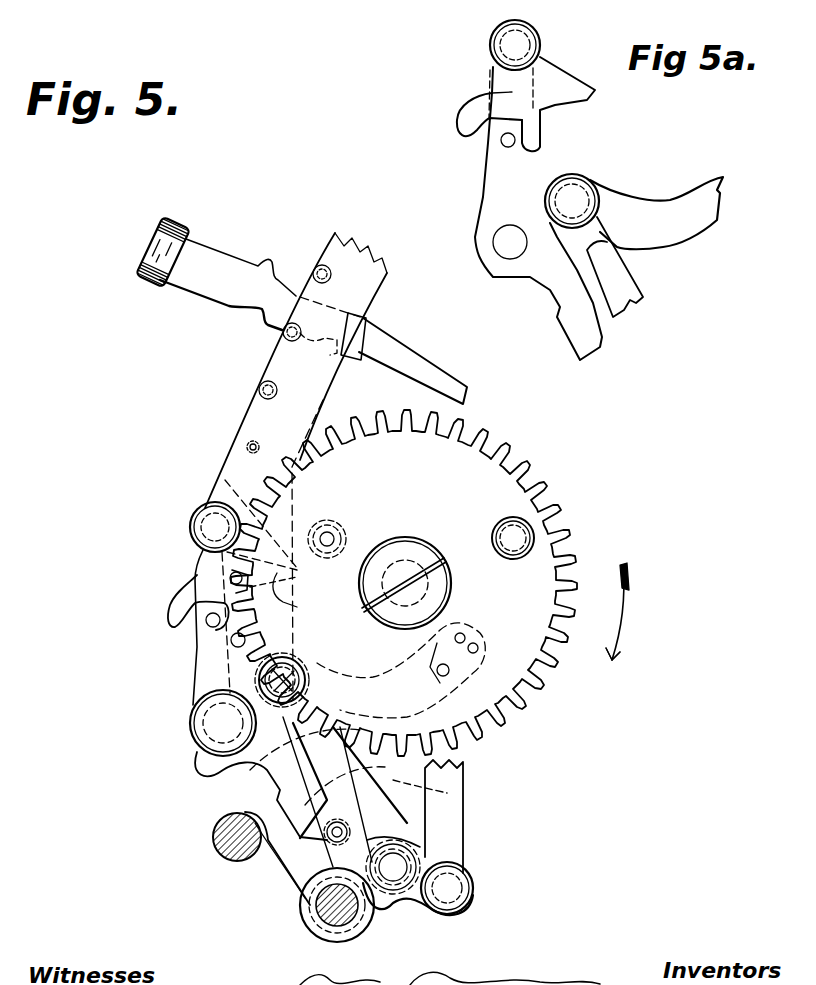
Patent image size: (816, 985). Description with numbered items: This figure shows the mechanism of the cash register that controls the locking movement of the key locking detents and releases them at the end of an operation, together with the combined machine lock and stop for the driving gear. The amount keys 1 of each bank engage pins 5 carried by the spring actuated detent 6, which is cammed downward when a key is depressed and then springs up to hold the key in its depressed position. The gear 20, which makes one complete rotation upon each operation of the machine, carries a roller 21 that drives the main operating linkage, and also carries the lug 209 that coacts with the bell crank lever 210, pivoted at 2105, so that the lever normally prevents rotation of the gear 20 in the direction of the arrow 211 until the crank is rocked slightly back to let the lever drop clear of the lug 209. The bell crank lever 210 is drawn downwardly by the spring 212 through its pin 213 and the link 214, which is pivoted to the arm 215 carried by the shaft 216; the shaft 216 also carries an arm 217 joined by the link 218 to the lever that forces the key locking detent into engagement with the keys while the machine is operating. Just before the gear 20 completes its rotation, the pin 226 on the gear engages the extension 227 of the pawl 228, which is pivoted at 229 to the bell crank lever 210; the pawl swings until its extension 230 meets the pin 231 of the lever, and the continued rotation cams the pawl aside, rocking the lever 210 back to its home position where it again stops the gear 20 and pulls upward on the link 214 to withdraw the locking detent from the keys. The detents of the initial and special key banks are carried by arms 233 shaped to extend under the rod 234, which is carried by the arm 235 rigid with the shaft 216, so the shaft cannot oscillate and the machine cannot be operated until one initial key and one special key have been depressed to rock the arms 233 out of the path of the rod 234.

In FIG. 5, the amount keys 1 is at (148, 245).
In FIG. 5, the pins 5 is at (262, 390).
In FIG. 5, the detent 6 is at (312, 263).
In FIG. 5, the gear 20 is at (545, 503).
In FIG. 5, the roller 21 is at (538, 544).
In FIG. 5, the lug 209 is at (610, 675).
In FIG. 5, the bell crank lever 210 is at (325, 674).
In FIG. 5A, the bell crank lever 210 is at (525, 163).
In FIG. 5, the arrow 211 is at (623, 620).
In FIG. 5, the spring 212 is at (352, 918).
In FIG. 5, the pin 213 is at (258, 671).
In FIG. 5, the link 214 is at (383, 825).
In FIG. 5A, the link 214 is at (617, 273).
In FIG. 5, the arm 215 is at (390, 897).
In FIG. 5, the shaft 216 is at (320, 908).
In FIG. 5, the arm 217 is at (290, 853).
In FIG. 5, the link 218 is at (453, 800).
In FIG. 5, the pin 226 is at (340, 526).
In FIG. 5, the extension 227 is at (297, 606).
In FIG. 5, the pawl 228 is at (186, 592).
In FIG. 5A, the pawl 228 is at (487, 100).
In FIG. 5, the pivot 229 is at (212, 522).
In FIG. 5, the extension 230 is at (168, 616).
In FIG. 5A, the extension 230 is at (503, 148).
In FIG. 5, the pin 231 is at (212, 626).
In FIG. 5, the arms 233 is at (262, 776).
In FIG. 5, the rod 234 is at (290, 853).
In FIG. 5, the arm 235 is at (297, 880).
In FIG. 5, the pivot 2105 is at (212, 721).
In FIG. 5A, the pivot 2105 is at (509, 251).